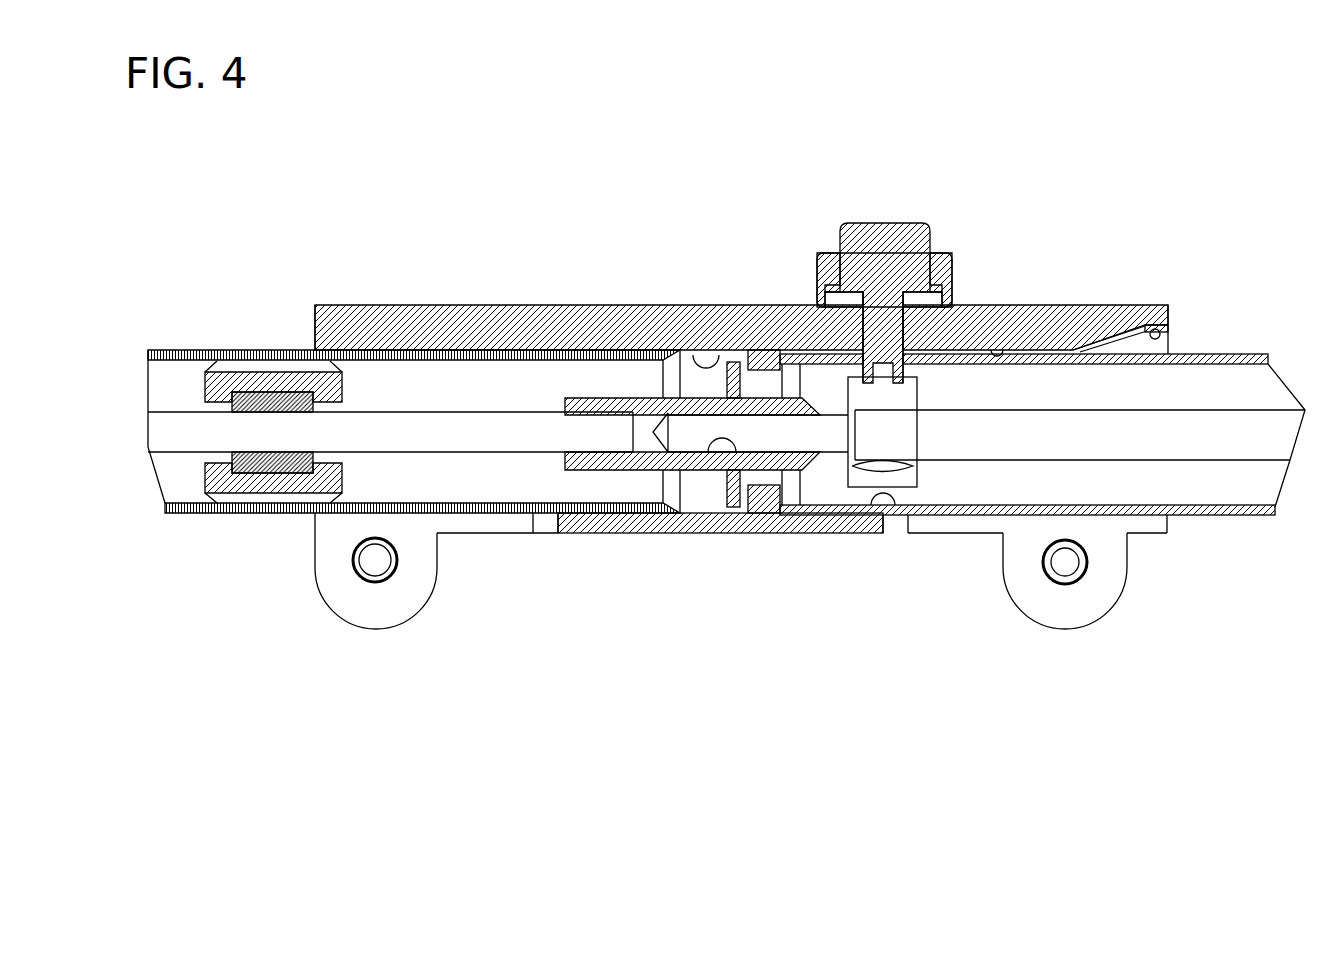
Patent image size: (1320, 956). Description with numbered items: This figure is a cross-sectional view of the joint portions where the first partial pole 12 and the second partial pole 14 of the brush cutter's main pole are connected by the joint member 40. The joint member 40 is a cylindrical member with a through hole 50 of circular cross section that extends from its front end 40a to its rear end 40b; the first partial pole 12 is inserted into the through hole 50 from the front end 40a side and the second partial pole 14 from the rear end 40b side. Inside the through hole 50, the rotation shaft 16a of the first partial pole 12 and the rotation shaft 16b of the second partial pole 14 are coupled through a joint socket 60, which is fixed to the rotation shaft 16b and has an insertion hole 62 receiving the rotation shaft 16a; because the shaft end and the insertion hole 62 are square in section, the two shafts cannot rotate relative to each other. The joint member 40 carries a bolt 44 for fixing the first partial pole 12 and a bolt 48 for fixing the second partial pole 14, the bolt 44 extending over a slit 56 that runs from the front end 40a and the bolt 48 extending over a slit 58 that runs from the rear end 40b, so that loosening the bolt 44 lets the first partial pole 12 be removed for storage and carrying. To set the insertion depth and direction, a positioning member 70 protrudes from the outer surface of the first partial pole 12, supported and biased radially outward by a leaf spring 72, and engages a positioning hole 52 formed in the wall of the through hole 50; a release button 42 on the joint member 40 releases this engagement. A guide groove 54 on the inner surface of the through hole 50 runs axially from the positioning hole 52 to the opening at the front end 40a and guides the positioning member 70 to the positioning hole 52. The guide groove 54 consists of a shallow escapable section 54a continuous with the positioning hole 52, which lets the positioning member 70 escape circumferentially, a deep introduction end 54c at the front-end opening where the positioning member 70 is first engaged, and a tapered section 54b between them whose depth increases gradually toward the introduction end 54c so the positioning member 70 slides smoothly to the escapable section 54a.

The first partial pole 12 is at (1240, 517).
The second partial pole 14 is at (205, 515).
The rotation shaft 16a is at (1243, 410).
The rotation shaft 16b is at (430, 410).
The joint member 40 is at (365, 305).
The front end 40a is at (1168, 325).
The rear end 40b is at (313, 328).
The release button 42 is at (908, 223).
The bolt 44 is at (1068, 565).
The bolt 48 is at (355, 572).
The through hole 50 is at (700, 366).
The positioning hole 52 is at (867, 311).
The guide groove 54 is at (1073, 273).
The escapable section 54a is at (1001, 343).
The tapered section 54b is at (1083, 345).
The introduction end 54c is at (1146, 286).
The slit 56 is at (978, 523).
The slit 58 is at (472, 527).
The joint socket 60 is at (603, 472).
The insertion hole 62 is at (712, 470).
The positioning member 70 is at (851, 223).
The leaf spring 72 is at (917, 395).